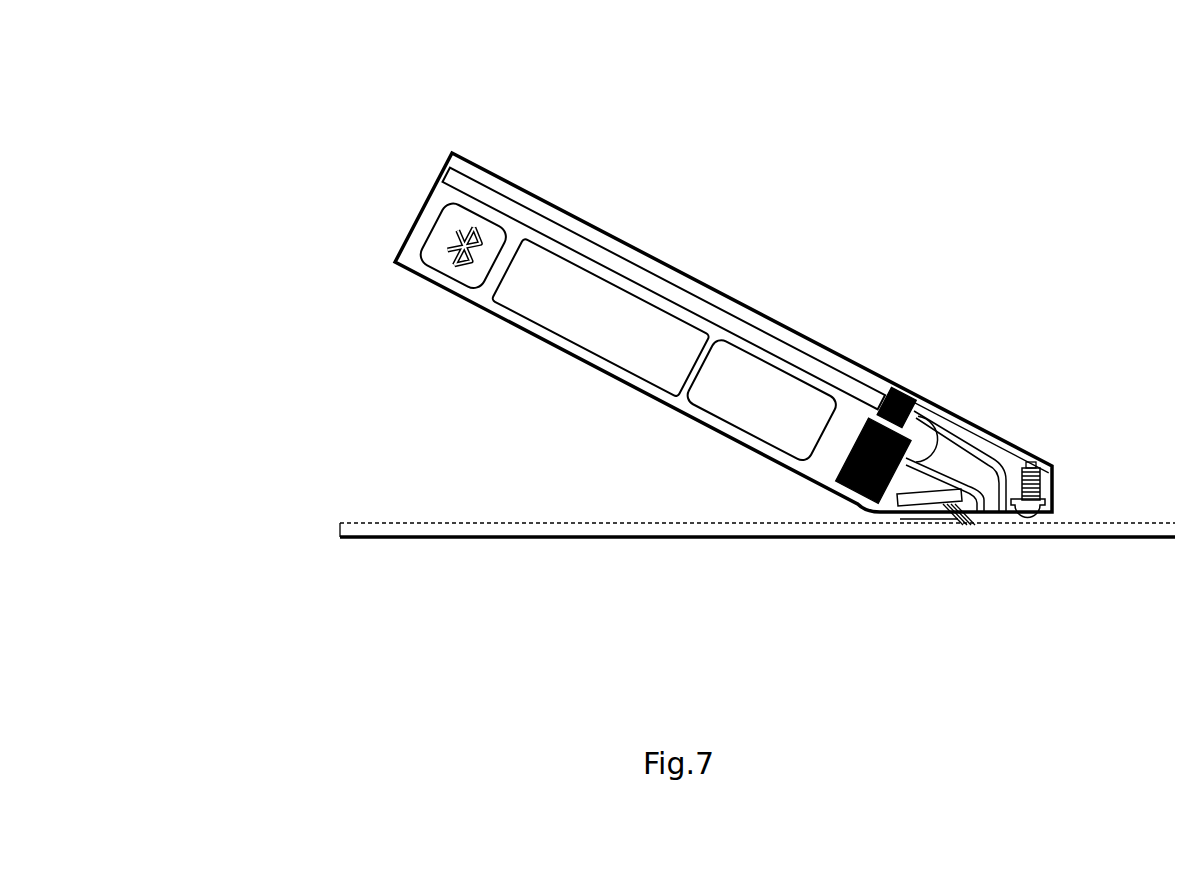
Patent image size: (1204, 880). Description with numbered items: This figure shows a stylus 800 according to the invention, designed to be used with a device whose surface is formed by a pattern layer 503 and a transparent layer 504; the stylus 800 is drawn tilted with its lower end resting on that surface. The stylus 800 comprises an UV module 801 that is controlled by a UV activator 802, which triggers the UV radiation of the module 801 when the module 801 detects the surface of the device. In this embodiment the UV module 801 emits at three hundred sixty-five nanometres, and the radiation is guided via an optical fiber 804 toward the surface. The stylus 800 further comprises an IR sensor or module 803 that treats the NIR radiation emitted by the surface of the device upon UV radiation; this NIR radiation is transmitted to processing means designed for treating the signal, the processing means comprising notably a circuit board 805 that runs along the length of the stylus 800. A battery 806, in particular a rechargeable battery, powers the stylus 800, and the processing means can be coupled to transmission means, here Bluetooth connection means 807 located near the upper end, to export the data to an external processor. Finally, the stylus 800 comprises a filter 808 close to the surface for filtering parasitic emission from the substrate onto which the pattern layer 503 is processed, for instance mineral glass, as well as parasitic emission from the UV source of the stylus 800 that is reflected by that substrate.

The stylus 800 is at (1080, 155).
The UV module 801 is at (927, 412).
The UV activator 802 is at (1035, 505).
The IR sensor or module 803 is at (906, 502).
The optical fiber 804 is at (997, 447).
The circuit board 805 is at (663, 288).
The battery 806 is at (558, 318).
The Bluetooth connection means 807 is at (440, 217).
The filter 808 is at (937, 518).
The pattern layer 503 is at (340, 537).
The transparent layer 504 is at (340, 524).